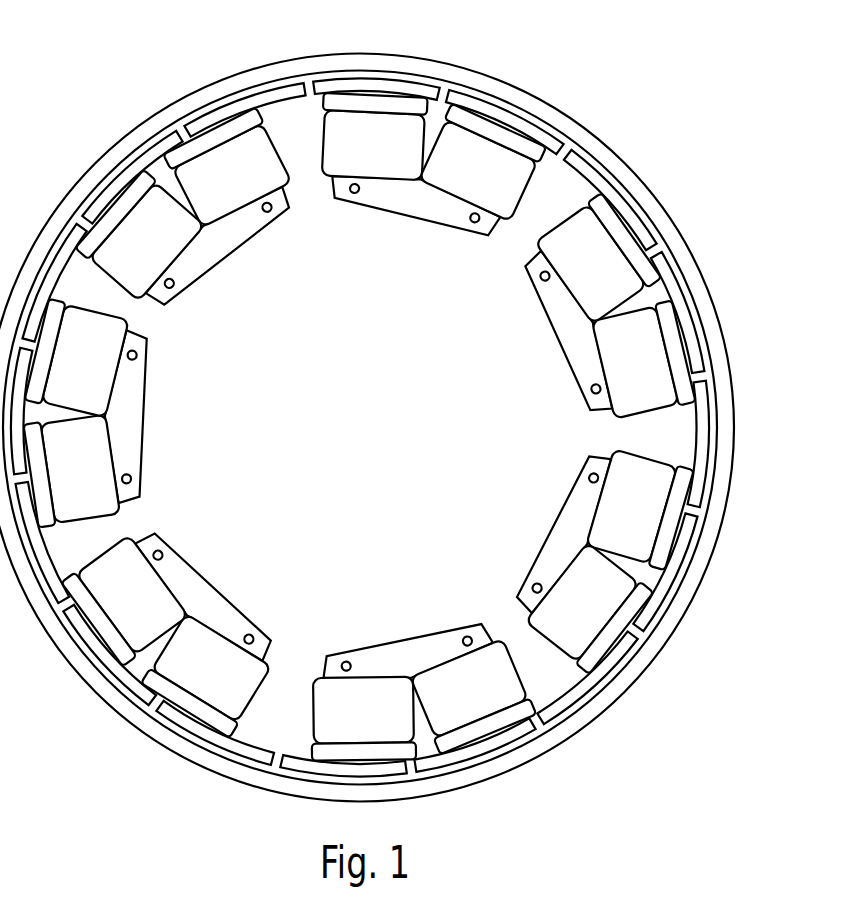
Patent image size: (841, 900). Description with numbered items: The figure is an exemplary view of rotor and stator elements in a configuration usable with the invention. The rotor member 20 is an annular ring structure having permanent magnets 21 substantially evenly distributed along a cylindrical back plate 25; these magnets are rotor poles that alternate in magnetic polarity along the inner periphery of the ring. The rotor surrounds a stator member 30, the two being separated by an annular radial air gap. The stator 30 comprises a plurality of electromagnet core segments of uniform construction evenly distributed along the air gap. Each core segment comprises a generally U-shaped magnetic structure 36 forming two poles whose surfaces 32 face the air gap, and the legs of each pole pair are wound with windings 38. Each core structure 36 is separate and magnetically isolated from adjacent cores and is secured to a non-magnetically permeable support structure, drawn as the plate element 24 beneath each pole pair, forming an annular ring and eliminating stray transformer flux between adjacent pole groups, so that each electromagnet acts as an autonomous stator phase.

The rotor member 20 is at (379, 409).
The permanent magnets 21 is at (588, 158).
The mounting plate 24 is at (415, 198).
The cylindrical back plate 25 is at (533, 96).
The stator member 30 is at (366, 427).
The pole surfaces 32 is at (375, 104).
The U-shaped magnetic structure 36 is at (354, 188).
The windings 38 is at (373, 145).